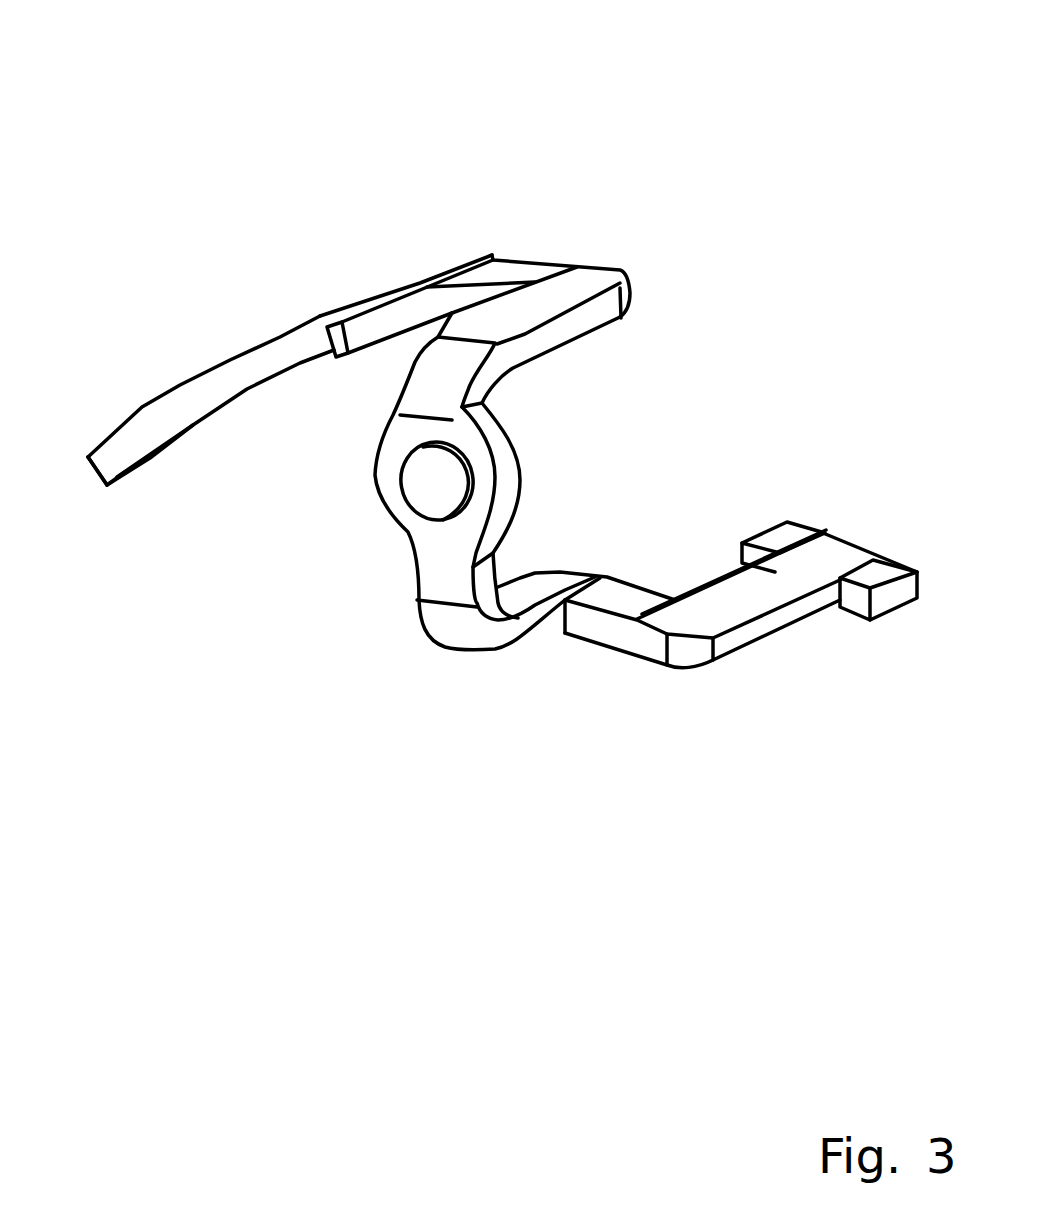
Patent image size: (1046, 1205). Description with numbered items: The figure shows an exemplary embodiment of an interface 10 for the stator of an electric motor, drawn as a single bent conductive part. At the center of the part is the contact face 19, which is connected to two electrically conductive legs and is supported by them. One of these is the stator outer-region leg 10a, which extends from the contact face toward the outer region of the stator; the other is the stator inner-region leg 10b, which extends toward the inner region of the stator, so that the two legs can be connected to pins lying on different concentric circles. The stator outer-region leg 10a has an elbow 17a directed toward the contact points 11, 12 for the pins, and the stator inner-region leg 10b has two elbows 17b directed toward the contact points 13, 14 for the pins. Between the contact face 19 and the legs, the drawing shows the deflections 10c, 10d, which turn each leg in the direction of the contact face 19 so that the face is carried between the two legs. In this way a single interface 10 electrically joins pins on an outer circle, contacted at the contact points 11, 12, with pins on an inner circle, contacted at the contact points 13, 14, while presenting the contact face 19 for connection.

The interface 10 is at (600, 72).
The stator outer-region leg 10a is at (560, 333).
The stator inner-region leg 10b is at (605, 625).
The deflection 10c is at (392, 402).
The deflection 10d is at (415, 645).
The contact point 11 is at (87, 418).
The contact point 12 is at (122, 385).
The contact point 13 is at (806, 503).
The contact point 14 is at (909, 533).
The elbow 17a is at (326, 284).
The elbows 17b is at (740, 775).
The contact face 19 is at (476, 470).